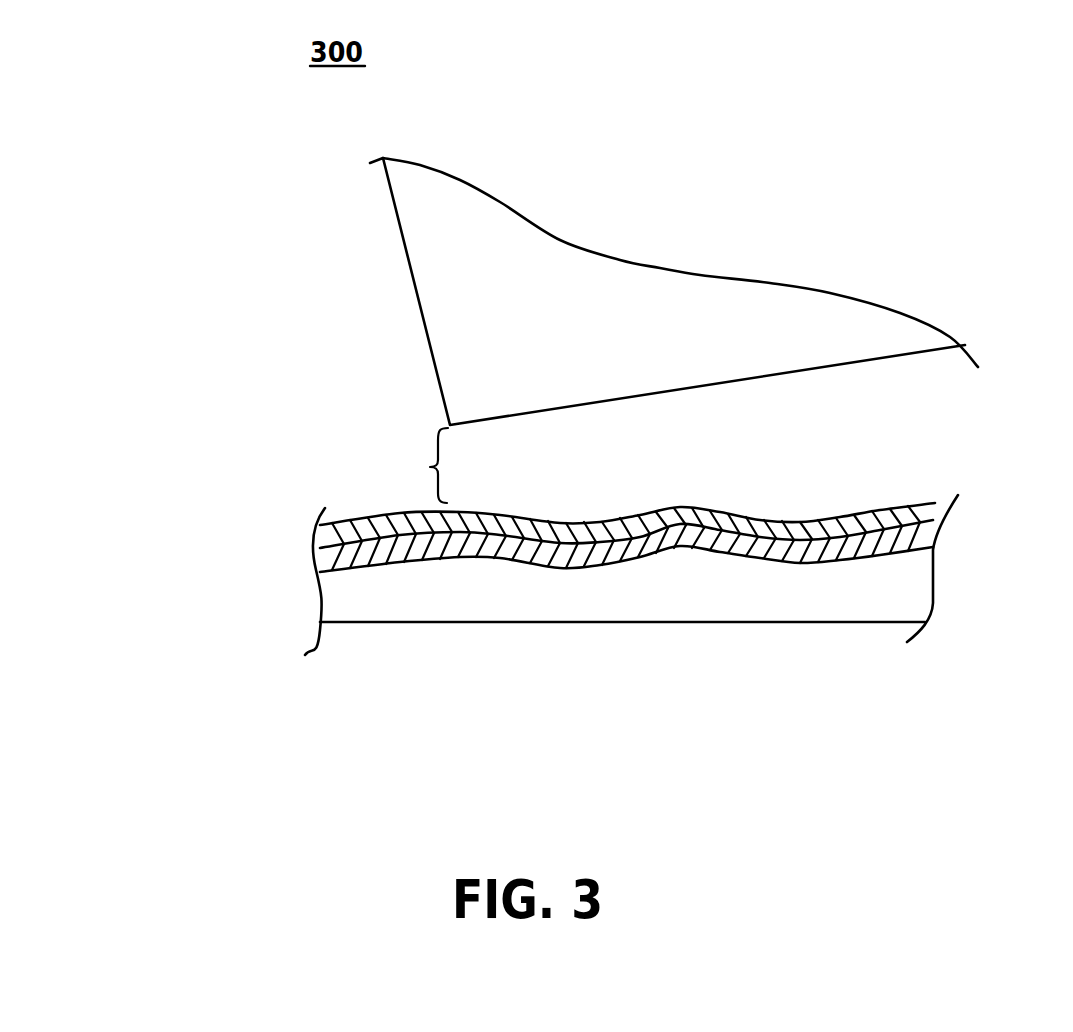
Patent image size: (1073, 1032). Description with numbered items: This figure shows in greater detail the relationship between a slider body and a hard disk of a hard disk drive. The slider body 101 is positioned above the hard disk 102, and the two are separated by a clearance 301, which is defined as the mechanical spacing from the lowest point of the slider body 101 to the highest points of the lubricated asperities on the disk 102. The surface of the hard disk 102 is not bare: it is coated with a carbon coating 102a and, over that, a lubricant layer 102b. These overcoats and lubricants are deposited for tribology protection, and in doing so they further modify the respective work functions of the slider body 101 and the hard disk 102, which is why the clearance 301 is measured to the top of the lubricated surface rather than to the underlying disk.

The slider body 101 is at (665, 297).
The clearance 301 is at (414, 465).
The hard disk 102 is at (350, 592).
The carbon coating 102a is at (910, 533).
The lubricant layer 102b is at (328, 531).